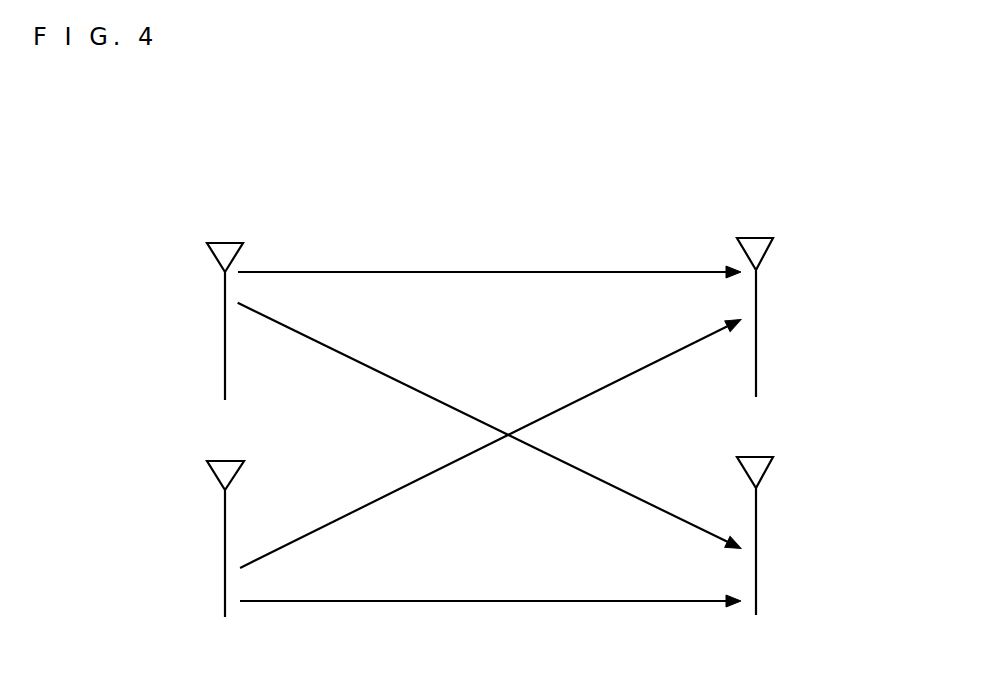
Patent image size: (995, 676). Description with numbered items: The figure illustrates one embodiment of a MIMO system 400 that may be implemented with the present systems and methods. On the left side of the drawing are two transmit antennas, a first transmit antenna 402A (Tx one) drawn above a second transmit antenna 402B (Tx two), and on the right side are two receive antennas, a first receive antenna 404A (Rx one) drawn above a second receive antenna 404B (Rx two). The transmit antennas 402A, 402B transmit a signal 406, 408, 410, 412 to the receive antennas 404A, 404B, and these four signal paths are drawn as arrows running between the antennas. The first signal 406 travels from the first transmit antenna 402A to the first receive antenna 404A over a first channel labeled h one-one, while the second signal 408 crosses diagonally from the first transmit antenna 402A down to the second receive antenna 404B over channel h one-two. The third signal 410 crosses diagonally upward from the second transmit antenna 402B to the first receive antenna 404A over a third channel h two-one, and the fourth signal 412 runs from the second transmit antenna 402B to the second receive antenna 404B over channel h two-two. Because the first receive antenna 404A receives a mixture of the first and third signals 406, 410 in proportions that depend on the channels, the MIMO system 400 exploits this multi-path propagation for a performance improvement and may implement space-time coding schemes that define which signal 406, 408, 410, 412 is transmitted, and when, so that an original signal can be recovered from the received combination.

The MIMO system 400 is at (101, 175).
The first transmit antenna 402A is at (207, 244).
The second transmit antenna 402B is at (207, 462).
The first receive antenna 404A is at (773, 238).
The second receive antenna 404B is at (773, 457).
The first signal 406 is at (440, 270).
The second signal 408 is at (399, 382).
The third signal 410 is at (364, 505).
The fourth signal 412 is at (412, 598).